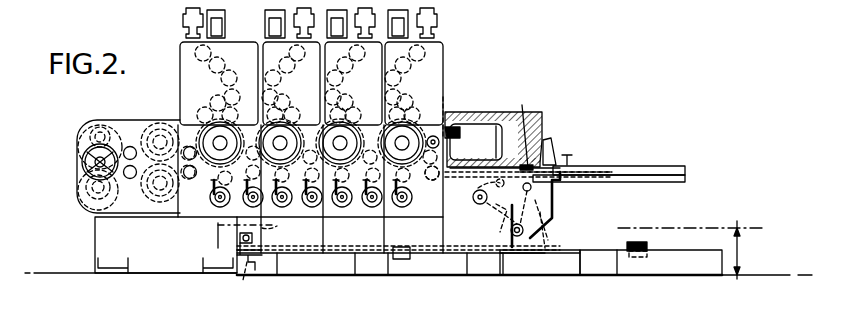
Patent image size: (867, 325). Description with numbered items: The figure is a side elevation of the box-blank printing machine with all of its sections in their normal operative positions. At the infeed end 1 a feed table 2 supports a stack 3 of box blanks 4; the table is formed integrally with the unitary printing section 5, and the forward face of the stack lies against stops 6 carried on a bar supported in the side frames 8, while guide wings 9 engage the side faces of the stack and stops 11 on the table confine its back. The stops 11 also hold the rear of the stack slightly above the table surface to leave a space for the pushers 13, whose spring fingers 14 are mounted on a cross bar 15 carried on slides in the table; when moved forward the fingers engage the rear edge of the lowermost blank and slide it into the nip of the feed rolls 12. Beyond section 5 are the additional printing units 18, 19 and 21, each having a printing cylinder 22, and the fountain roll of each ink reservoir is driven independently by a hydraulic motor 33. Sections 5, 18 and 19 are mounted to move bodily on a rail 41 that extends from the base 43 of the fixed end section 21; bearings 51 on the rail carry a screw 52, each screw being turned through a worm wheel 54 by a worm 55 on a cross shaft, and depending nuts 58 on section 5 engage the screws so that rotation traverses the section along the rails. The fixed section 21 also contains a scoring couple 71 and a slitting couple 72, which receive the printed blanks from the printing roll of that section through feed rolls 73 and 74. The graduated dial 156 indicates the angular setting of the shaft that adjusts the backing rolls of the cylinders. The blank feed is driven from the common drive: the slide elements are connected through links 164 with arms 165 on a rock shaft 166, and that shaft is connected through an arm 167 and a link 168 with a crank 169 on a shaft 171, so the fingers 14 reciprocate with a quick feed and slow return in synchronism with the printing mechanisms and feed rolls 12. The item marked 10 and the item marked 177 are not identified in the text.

The infeed end 1 is at (600, 166).
The feed table 2 is at (612, 168).
The stack 3 is at (545, 120).
The box blanks 4 is at (545, 137).
The unitary printing section 5 is at (412, 113).
The stops 6 is at (447, 104).
The side frames 8 is at (452, 127).
The guide wings 9 is at (475, 132).
The direction of travel 10 is at (332, 4).
The stops 11 is at (562, 156).
The feed rolls 12 is at (430, 168).
The pushers 13 is at (481, 183).
The spring fingers 14 is at (556, 183).
The cross bar 15 is at (527, 176).
The printing unit 18 is at (352, 113).
The printing unit 19 is at (290, 113).
The printing unit 21 is at (220, 115).
The printing cylinder 22 is at (203, 127).
The hydraulic motor 33 is at (184, 18).
The rail 41 is at (688, 265).
The base 43 is at (166, 245).
The bearings 51 is at (648, 246).
The screw 52 is at (598, 246).
The worm wheel 54 is at (246, 264).
The worm 55 is at (256, 223).
The depending nuts 58 is at (400, 260).
The scoring couple 71 is at (150, 126).
The slitting couple 72 is at (108, 122).
The feed roll 73 is at (195, 178).
The feed roll 74 is at (118, 192).
The graduated dial 156 is at (403, 221).
The links 164 is at (551, 222).
The arms 165 is at (540, 225).
The rock shaft 166 is at (540, 262).
The arm 167 is at (505, 225).
The link 168 is at (498, 222).
The crank 169 is at (483, 207).
The shaft 171 is at (478, 197).
The take-up roll 177 is at (70, 156).